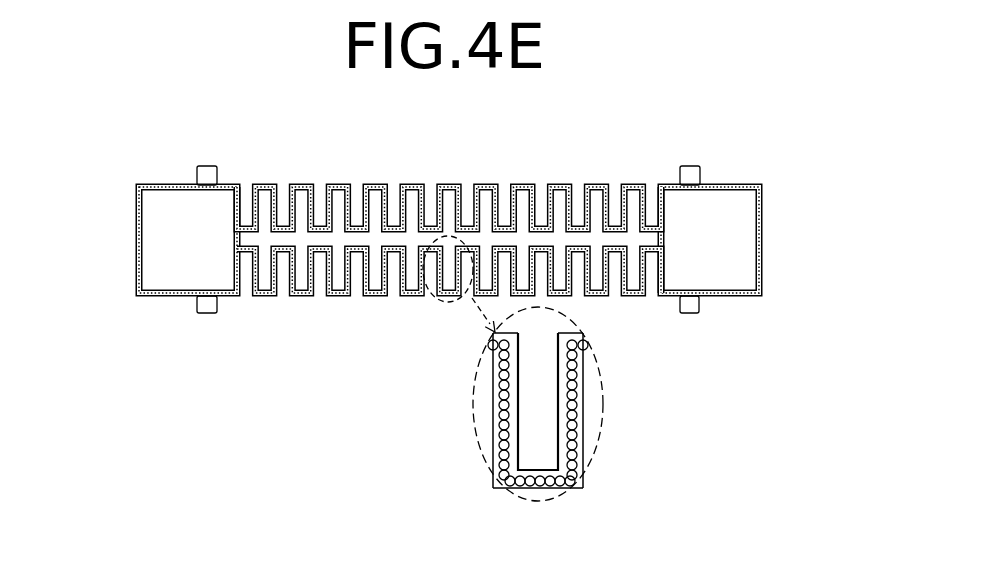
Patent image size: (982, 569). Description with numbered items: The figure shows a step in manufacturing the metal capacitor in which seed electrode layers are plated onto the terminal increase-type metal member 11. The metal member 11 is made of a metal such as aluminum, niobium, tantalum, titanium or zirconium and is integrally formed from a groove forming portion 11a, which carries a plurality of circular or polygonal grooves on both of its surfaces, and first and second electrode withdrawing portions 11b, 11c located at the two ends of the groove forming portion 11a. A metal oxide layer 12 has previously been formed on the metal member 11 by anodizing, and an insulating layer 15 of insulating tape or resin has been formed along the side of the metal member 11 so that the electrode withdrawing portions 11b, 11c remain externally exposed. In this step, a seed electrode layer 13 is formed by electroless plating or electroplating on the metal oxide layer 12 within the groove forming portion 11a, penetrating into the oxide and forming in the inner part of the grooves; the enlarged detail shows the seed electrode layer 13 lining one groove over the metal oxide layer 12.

The terminal increase-type metal member 11 is at (545, 412).
The groove forming portion 11a is at (590, 372).
The first electrode withdrawing portion 11b is at (147, 240).
The second electrode withdrawing portion 11c is at (752, 247).
The metal oxide layer 12 is at (575, 478).
The seed electrode layer 13 is at (452, 299).
The insulating layer 15 is at (207, 165).